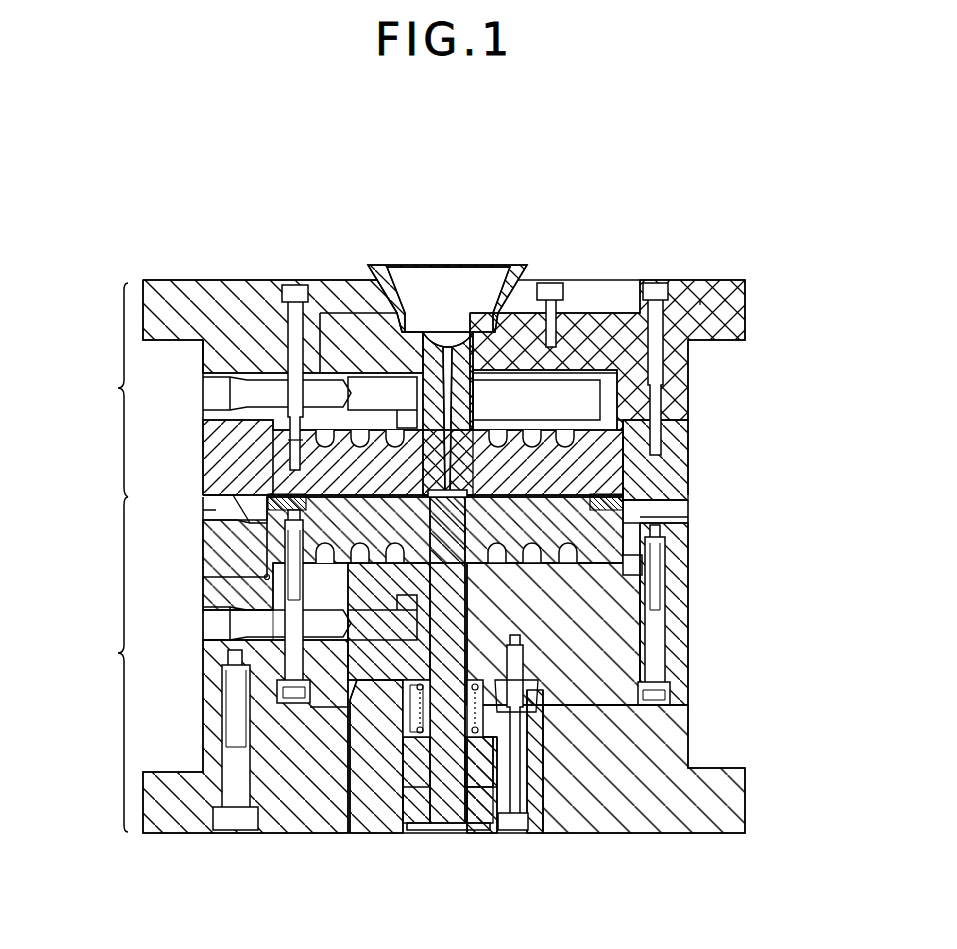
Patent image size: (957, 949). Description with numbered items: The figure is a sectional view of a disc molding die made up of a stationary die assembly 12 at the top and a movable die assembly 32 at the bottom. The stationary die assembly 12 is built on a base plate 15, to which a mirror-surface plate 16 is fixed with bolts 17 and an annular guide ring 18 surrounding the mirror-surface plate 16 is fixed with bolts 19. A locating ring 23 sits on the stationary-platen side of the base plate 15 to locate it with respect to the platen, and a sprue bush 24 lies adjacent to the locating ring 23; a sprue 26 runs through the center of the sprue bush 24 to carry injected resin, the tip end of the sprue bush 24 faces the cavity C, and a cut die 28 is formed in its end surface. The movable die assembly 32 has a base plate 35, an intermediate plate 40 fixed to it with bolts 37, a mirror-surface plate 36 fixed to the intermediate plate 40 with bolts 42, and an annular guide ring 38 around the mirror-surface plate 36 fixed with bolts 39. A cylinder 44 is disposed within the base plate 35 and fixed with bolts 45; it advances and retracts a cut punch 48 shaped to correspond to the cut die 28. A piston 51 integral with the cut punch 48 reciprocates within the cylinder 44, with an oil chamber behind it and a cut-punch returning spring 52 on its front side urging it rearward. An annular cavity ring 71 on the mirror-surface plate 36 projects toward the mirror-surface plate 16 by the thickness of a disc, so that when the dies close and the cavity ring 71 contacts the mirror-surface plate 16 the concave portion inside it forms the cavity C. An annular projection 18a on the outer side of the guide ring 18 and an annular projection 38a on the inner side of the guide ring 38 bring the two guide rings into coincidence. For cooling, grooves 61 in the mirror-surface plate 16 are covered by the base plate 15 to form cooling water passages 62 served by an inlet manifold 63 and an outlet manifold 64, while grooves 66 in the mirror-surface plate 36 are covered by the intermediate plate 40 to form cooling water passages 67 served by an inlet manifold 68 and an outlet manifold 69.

The stationary die assembly 12 is at (82, 402).
The base plate 15 is at (207, 300).
The mirror-surface plate 16 is at (612, 468).
The bolts 17 is at (296, 285).
The annular guide ring 18 is at (690, 447).
The annular projection 18a is at (237, 520).
The bolts 19 is at (655, 300).
The locating ring 23 is at (512, 292).
The sprue bush 24 is at (402, 350).
The sprue 26 is at (456, 330).
The cut die 28 is at (575, 335).
The movable die assembly 32 is at (82, 667).
The base plate 35 is at (298, 820).
The mirror-surface plate 36 is at (640, 505).
The bolts 37 is at (234, 822).
The annular guide ring 38 is at (688, 543).
The annular projection 38a is at (203, 510).
The bolts 39 is at (655, 590).
The intermediate plate 40 is at (222, 592).
The bolts 42 is at (290, 690).
The cylinder 44 is at (390, 815).
The bolts 45 is at (512, 822).
The cut punch 48 is at (320, 490).
The piston 51 is at (480, 758).
The cut-punch returning spring 52 is at (655, 680).
The grooves 61 is at (660, 385).
The cooling water passages 62 is at (693, 305).
The inlet manifold 63 is at (358, 388).
The outlet manifold 64 is at (270, 330).
The grooves 66 is at (663, 545).
The cooling water passages 67 is at (568, 550).
The inlet manifold 68 is at (380, 812).
The outlet manifold 69 is at (335, 690).
The annular cavity ring 71 is at (205, 548).
The cavity C is at (673, 455).